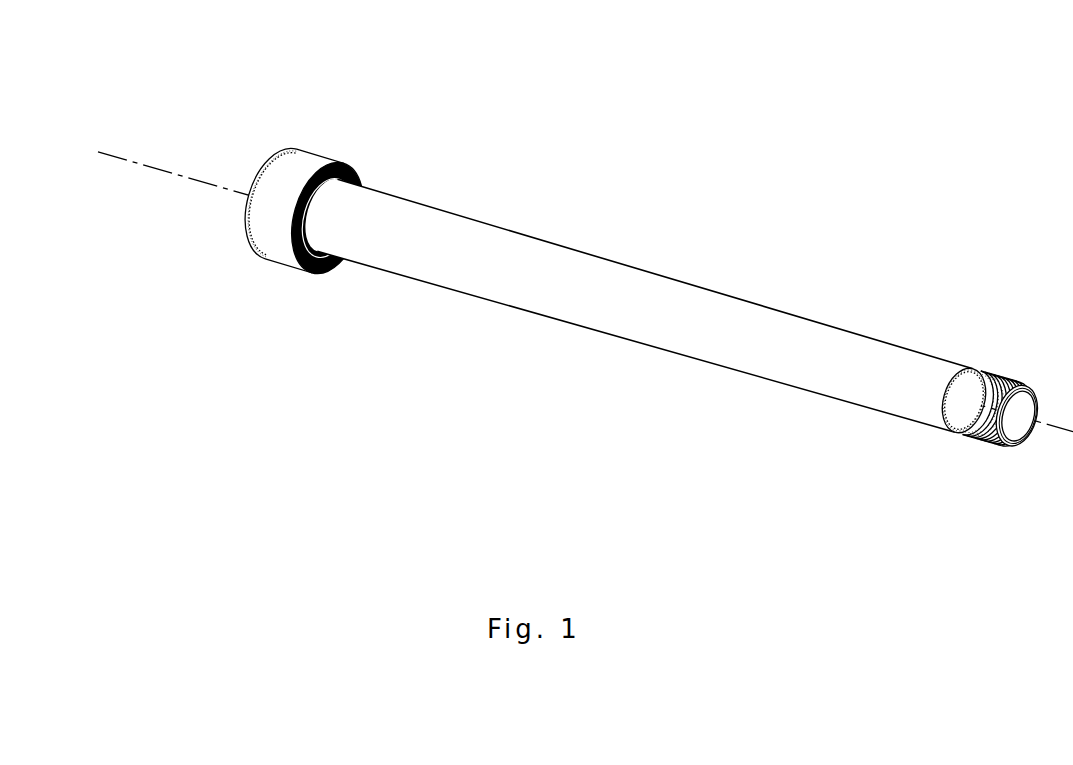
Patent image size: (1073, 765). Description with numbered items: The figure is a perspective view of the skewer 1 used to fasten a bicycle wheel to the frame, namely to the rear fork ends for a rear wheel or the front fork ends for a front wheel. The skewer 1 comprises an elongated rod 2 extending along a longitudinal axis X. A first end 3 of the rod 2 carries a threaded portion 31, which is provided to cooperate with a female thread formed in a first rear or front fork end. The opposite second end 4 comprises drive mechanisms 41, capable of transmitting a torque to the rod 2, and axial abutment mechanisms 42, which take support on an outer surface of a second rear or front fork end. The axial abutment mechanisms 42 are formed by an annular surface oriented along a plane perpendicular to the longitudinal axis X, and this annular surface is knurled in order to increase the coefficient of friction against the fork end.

The skewer 1 is at (604, 322).
The rod 2 is at (657, 344).
The first end 3 is at (1004, 419).
The threaded portion 31 is at (967, 438).
The second end 4 is at (292, 233).
The drive mechanisms 41 is at (243, 231).
The axial abutment mechanisms 42 is at (345, 164).
The longitudinal axis X is at (141, 161).